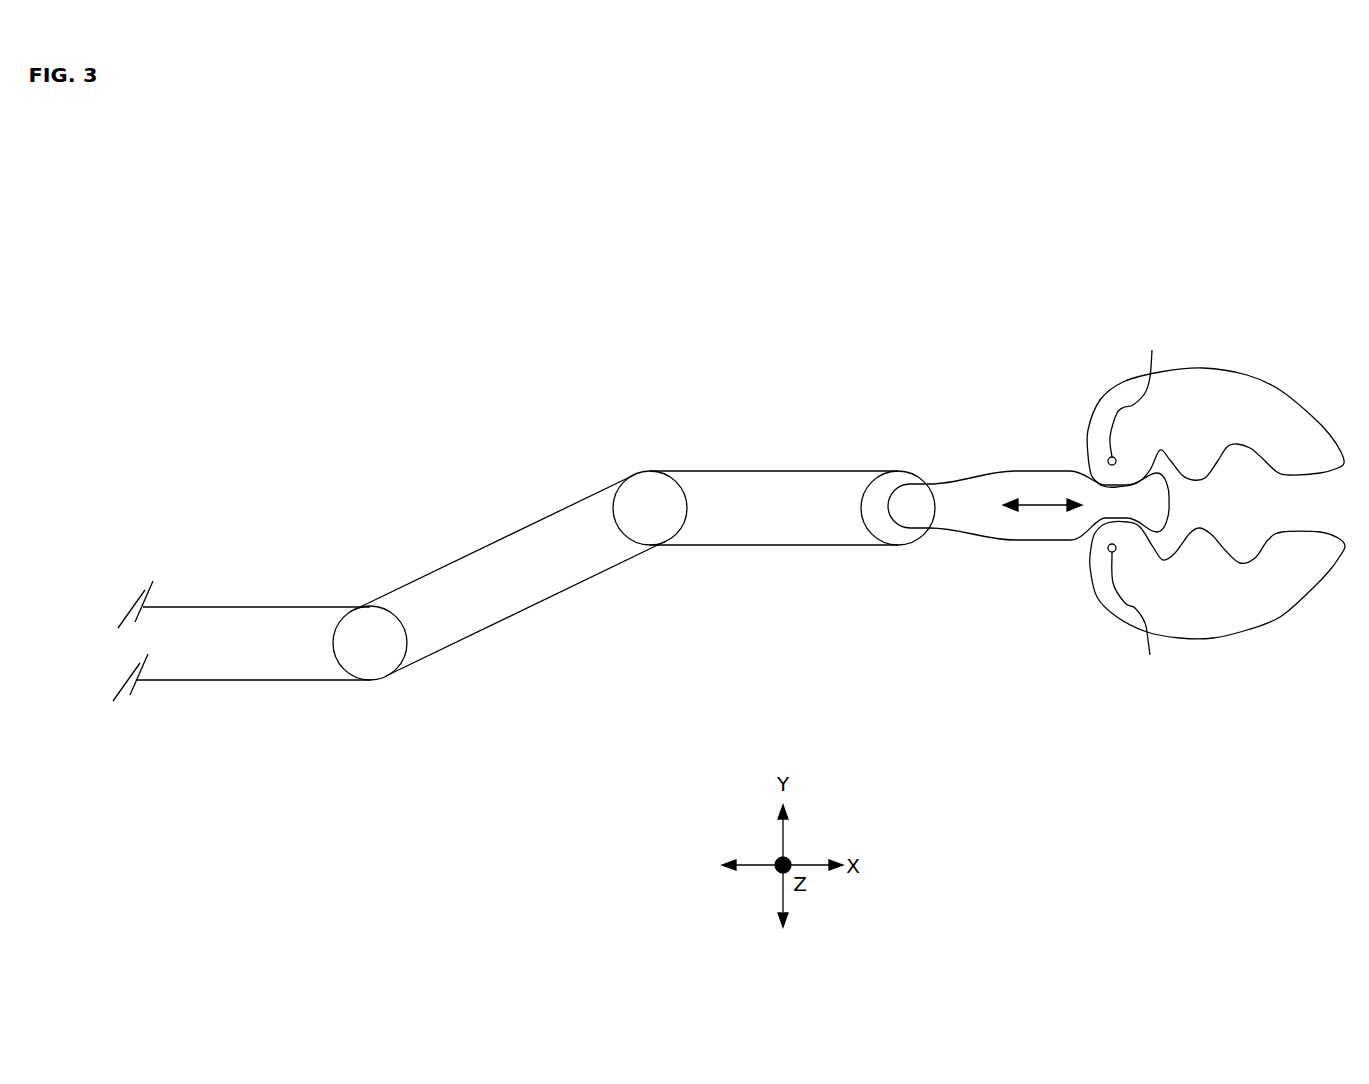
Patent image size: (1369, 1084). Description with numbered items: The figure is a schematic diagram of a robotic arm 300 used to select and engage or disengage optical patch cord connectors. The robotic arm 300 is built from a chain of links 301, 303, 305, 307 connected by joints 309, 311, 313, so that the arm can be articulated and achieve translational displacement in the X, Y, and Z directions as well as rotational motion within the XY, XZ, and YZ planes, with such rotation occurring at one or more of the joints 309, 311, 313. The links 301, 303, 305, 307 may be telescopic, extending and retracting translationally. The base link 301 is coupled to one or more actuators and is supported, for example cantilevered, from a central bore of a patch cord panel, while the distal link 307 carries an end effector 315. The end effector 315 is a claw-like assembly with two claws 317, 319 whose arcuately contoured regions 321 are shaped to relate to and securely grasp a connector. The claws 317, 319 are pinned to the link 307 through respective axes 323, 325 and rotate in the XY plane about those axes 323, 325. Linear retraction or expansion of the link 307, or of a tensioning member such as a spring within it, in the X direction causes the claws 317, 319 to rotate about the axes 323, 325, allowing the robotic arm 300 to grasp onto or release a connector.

The robotic arm 300 is at (343, 285).
The link 301 is at (235, 665).
The link 303 is at (540, 578).
The link 305 is at (800, 526).
The link 307 is at (1042, 546).
The joint 309 is at (376, 681).
The joint 311 is at (656, 546).
The joint 313 is at (900, 470).
The end effector 315 is at (1070, 262).
The claw 317 is at (1270, 380).
The claw 319 is at (1282, 620).
The arcuately contoured regions 321 is at (1228, 450).
The axis 323 is at (1152, 352).
The axis 325 is at (1150, 655).